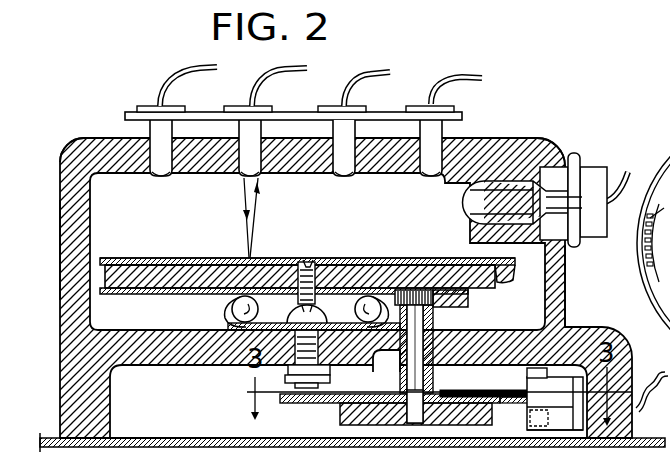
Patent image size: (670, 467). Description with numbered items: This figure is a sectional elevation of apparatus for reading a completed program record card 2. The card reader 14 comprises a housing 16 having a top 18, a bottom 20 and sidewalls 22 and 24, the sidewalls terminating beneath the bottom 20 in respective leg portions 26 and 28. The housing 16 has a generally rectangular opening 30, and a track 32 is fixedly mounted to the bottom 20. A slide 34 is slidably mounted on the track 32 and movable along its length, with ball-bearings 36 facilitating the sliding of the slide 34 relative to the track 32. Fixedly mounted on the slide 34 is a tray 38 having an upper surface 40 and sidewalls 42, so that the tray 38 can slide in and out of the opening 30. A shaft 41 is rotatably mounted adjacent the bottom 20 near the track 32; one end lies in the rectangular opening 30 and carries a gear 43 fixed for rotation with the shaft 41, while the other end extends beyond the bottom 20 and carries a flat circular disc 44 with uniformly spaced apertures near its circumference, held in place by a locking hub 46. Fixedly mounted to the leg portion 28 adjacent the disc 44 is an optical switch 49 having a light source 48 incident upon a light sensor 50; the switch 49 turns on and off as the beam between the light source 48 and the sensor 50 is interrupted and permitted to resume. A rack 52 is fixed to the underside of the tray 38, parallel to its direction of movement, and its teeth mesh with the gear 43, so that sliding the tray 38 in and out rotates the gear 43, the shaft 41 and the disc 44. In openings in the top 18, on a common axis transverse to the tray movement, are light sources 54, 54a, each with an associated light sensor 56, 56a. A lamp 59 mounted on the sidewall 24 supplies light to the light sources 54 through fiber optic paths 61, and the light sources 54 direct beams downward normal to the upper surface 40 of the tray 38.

The program record card 2 is at (178, 258).
The card reader 14 is at (94, 132).
The housing 16 is at (76, 145).
The top 18 is at (526, 139).
The bottom 20 is at (154, 367).
The sidewall 22 is at (69, 242).
The sidewall 24 is at (573, 275).
The leg portion 26 is at (106, 418).
The leg portion 28 is at (633, 376).
The rectangular opening 30 is at (333, 241).
The track 32 is at (240, 362).
The slide 34 is at (298, 262).
The ball-bearings 36 is at (232, 304).
The tray 38 is at (147, 292).
The upper surface 40 is at (392, 258).
The shaft 41 is at (415, 357).
The sidewalls 42 is at (112, 258).
The gear 43 is at (412, 290).
The flat circular disc 44 is at (500, 404).
The locking hub 46 is at (340, 404).
The light source 48 is at (527, 375).
The optical switch 49 is at (568, 440).
The light sensor 50 is at (531, 437).
The rack 52 is at (460, 301).
The light source 54 is at (152, 178).
The terminal pin end 54a is at (341, 179).
The light sensor 56 is at (168, 178).
The terminal pin 56a is at (350, 180).
The lamp 59 is at (464, 204).
The fiber optic paths 61 is at (213, 66).